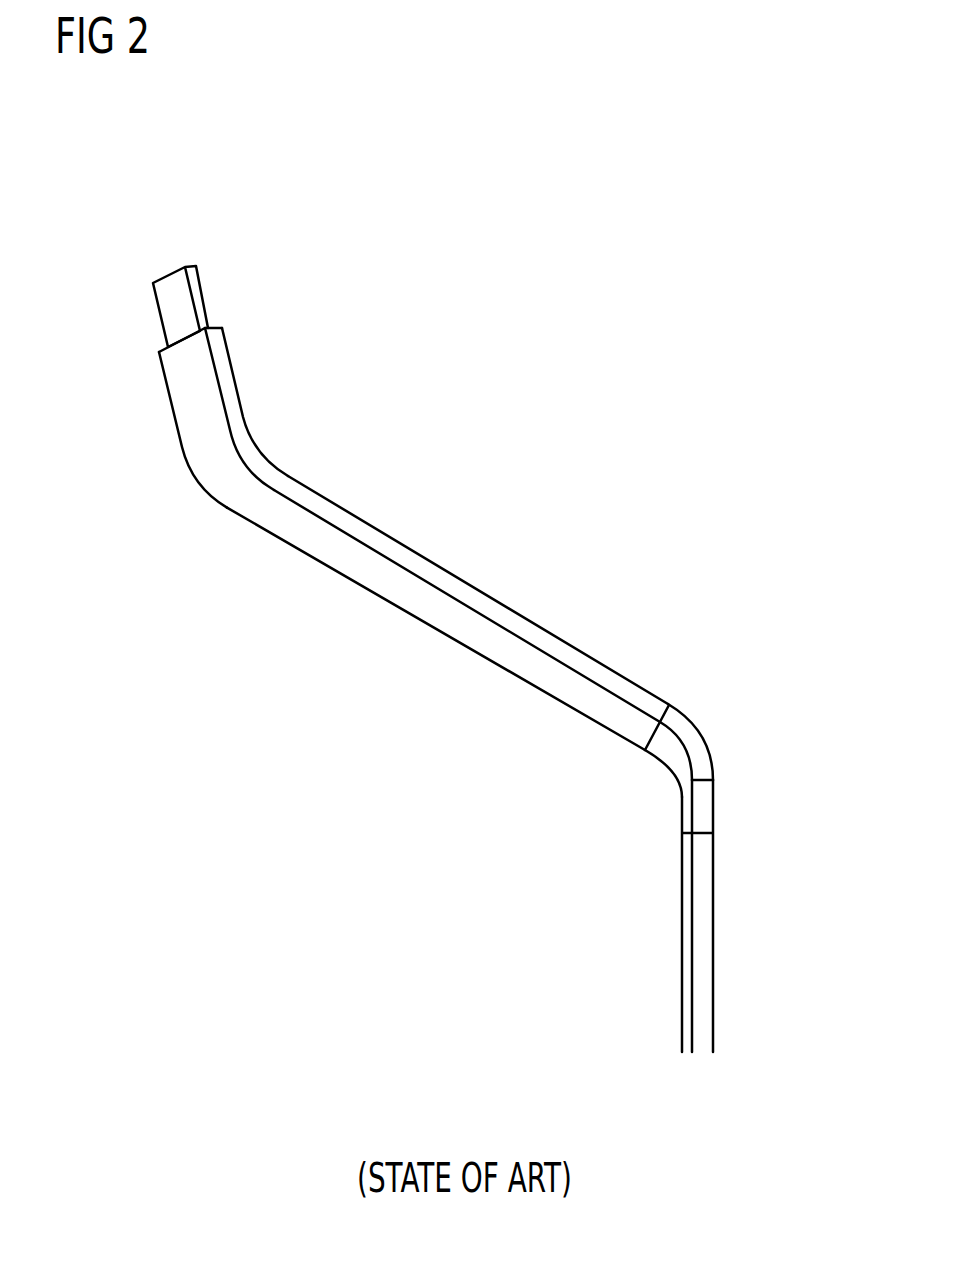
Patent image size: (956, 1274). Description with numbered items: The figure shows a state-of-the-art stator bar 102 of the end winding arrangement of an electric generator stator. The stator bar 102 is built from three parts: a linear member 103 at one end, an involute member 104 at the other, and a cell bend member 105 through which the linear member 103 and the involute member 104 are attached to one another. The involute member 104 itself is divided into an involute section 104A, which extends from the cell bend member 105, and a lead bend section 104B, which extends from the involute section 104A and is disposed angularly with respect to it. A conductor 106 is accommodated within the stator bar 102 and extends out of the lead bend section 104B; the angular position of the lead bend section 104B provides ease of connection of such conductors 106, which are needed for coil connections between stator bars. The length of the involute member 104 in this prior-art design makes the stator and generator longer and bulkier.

The stator bar 102 is at (617, 262).
The linear member 103 is at (713, 922).
The involute member 104 is at (227, 320).
The involute section 104A is at (602, 777).
The lead bend section 104B is at (122, 372).
The cell bend member 105 is at (660, 772).
The conductor 106 is at (202, 290).